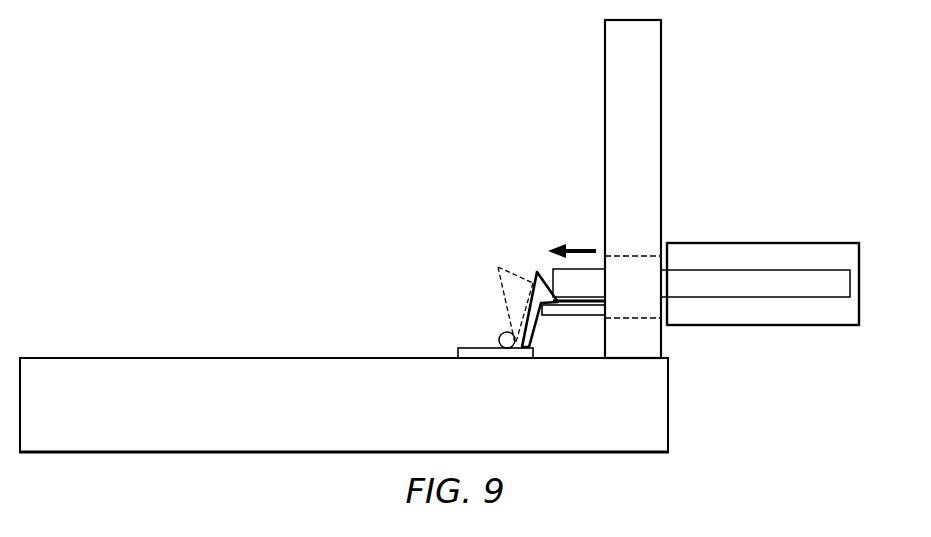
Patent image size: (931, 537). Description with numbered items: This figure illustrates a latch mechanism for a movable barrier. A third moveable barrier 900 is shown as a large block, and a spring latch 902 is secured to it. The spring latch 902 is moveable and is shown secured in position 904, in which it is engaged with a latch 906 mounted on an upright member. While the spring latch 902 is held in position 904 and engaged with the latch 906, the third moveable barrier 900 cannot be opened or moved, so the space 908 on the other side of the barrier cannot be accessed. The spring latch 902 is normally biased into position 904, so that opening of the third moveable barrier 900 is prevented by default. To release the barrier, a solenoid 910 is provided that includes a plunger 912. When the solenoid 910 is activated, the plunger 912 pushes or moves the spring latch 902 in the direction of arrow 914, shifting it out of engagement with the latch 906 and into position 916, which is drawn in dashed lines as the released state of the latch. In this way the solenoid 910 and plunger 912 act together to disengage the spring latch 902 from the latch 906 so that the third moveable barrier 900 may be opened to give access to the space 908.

The third moveable barrier 900 is at (155, 453).
The spring latch 902 is at (536, 283).
The position 904 is at (545, 322).
The latch 906 is at (590, 318).
The space 908 is at (258, 226).
The solenoid 910 is at (765, 325).
The plunger 912 is at (762, 268).
The arrow 914 is at (582, 245).
The position 916 is at (507, 300).